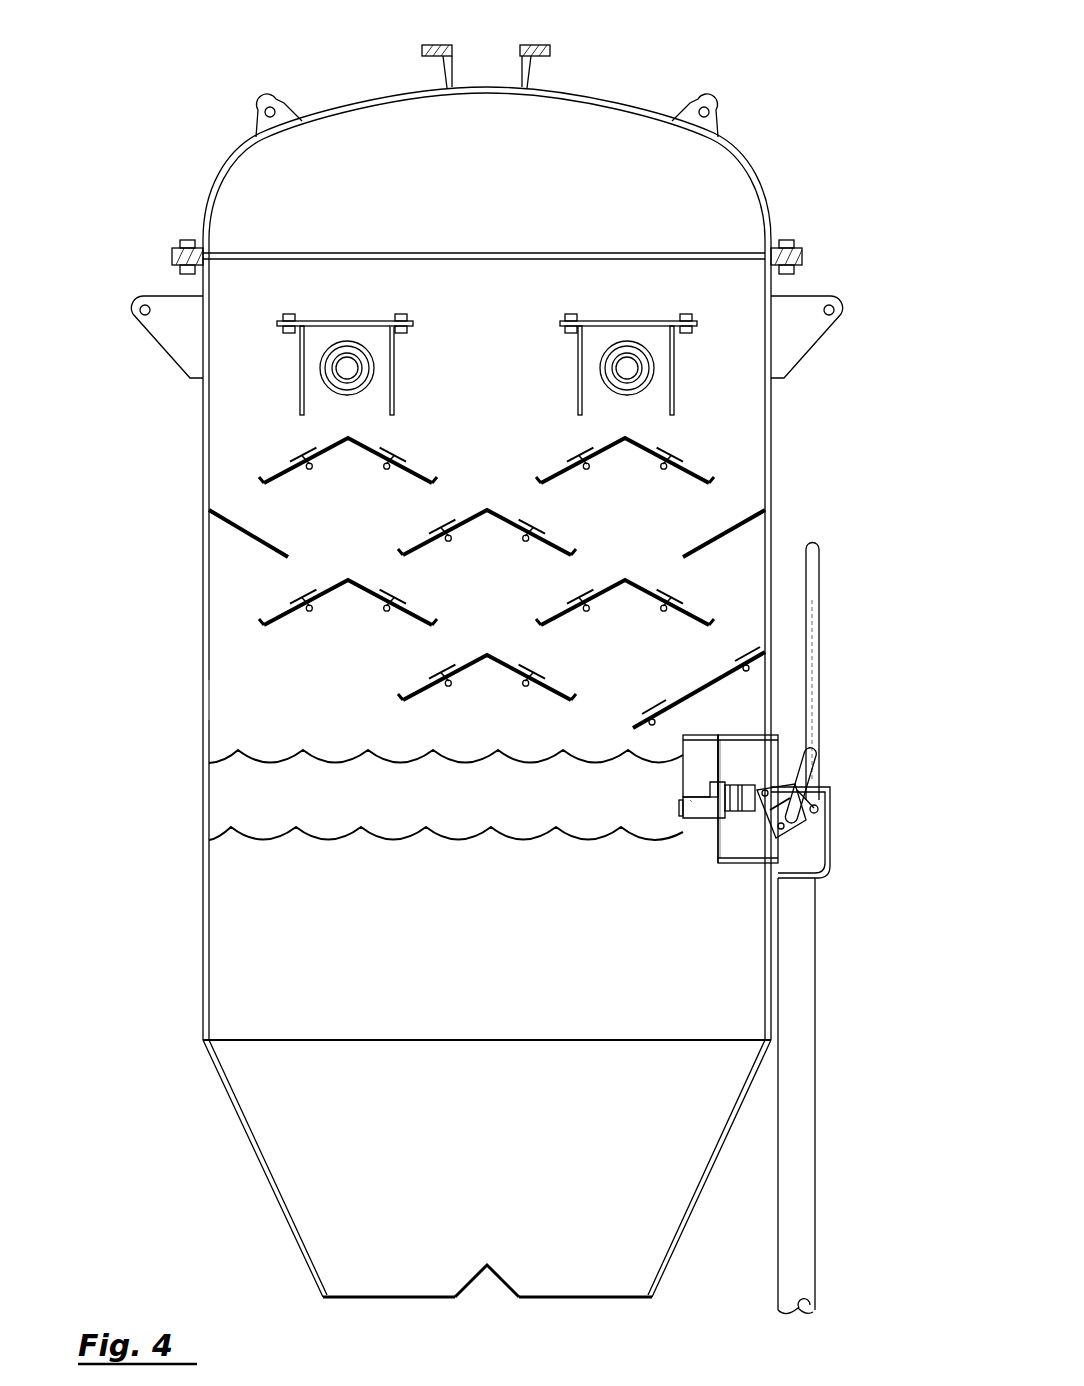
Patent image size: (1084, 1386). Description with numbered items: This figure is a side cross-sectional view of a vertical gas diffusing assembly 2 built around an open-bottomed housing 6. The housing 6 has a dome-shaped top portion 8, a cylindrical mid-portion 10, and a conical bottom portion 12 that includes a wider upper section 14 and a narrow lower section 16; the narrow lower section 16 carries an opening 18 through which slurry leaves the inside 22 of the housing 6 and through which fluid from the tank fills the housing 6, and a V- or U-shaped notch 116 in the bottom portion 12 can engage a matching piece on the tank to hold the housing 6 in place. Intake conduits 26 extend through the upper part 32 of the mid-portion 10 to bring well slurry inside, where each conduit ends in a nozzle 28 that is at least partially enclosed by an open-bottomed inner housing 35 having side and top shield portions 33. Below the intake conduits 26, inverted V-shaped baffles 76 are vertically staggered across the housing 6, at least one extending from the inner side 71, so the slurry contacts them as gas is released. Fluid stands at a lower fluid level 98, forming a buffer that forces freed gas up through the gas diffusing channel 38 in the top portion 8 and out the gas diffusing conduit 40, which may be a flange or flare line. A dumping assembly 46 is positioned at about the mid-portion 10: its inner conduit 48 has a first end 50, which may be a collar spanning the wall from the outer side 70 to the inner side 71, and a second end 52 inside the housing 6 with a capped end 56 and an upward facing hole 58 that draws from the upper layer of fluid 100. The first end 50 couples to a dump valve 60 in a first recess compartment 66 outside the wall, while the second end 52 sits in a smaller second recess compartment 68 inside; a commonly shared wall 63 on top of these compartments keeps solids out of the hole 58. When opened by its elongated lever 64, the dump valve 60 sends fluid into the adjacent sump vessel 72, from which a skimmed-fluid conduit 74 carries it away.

The vertical gas diffusing assembly 2 is at (123, 150).
The open-bottomed housing 6 is at (185, 935).
The top portion 8 is at (360, 98).
The mid-portion 10 is at (222, 672).
The bottom portion 12 is at (268, 1185).
The wider upper section 14 is at (210, 1053).
The narrow lower section 16 is at (313, 1288).
The opening 18 is at (572, 1297).
The inside of the housing 22 is at (290, 912).
The intake conduit 26 is at (345, 368).
The nozzle 28 is at (345, 395).
The upper part of the mid-portion 32 is at (185, 262).
The shield portions 33 is at (396, 380).
The inner housing 35 is at (375, 320).
The gas diffusing channel 38 is at (487, 55).
The gas diffusing conduit 40 is at (440, 47).
The dumping assembly 46 is at (830, 770).
The inner conduit 48 is at (680, 830).
The first end 50 is at (735, 805).
The second end 52 is at (700, 810).
The capped end 56 is at (722, 845).
The upward facing hole 58 is at (748, 757).
The dump valve 60 is at (822, 796).
The commonly shared wall 63 is at (762, 805).
The elongated lever 64 is at (812, 582).
The first recess compartment 66 is at (810, 752).
The second recess compartment 68 is at (692, 805).
The outer side 70 is at (205, 656).
The inner side 71 is at (208, 695).
The sump vessel 72 is at (834, 832).
The skimmed-fluid conduit 74 is at (798, 1130).
The baffles 76 is at (340, 462).
The lower fluid level 98 is at (236, 836).
The upper layer of fluid 100 is at (236, 752).
The notch 116 is at (487, 1290).